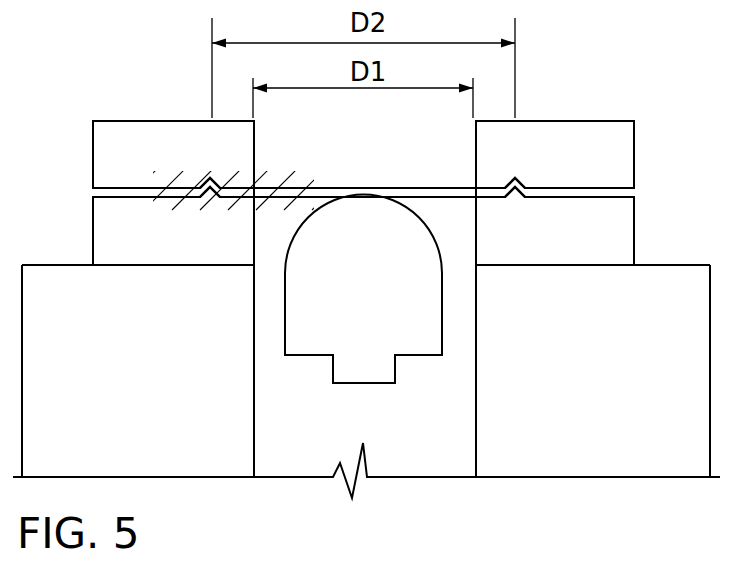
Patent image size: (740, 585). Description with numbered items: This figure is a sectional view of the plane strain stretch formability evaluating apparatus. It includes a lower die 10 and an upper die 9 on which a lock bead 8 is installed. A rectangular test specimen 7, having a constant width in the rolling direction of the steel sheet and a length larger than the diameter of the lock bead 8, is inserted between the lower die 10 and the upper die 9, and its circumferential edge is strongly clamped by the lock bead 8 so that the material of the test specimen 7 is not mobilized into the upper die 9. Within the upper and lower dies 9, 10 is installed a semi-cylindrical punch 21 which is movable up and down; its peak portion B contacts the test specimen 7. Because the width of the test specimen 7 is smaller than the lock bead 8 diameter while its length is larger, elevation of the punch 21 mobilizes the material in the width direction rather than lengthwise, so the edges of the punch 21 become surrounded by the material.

The test specimen 7 is at (405, 193).
The lock bead 8 is at (210, 177).
The upper die 9 is at (118, 148).
The lower die 10 is at (115, 219).
The semi-cylindrical punch 21 is at (363, 383).
The peak portion B is at (363, 193).